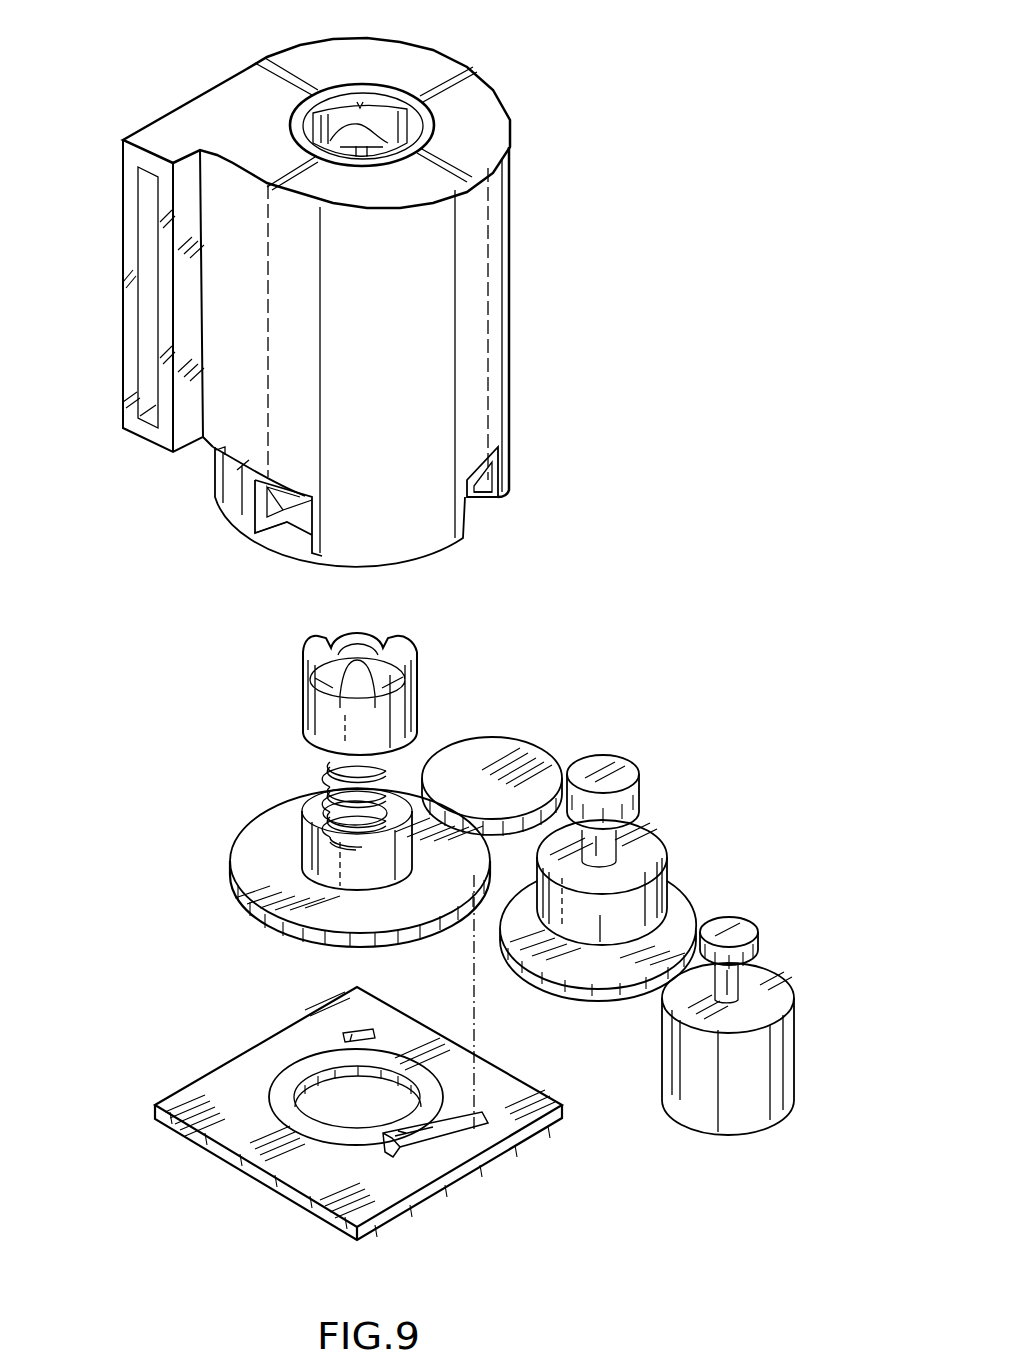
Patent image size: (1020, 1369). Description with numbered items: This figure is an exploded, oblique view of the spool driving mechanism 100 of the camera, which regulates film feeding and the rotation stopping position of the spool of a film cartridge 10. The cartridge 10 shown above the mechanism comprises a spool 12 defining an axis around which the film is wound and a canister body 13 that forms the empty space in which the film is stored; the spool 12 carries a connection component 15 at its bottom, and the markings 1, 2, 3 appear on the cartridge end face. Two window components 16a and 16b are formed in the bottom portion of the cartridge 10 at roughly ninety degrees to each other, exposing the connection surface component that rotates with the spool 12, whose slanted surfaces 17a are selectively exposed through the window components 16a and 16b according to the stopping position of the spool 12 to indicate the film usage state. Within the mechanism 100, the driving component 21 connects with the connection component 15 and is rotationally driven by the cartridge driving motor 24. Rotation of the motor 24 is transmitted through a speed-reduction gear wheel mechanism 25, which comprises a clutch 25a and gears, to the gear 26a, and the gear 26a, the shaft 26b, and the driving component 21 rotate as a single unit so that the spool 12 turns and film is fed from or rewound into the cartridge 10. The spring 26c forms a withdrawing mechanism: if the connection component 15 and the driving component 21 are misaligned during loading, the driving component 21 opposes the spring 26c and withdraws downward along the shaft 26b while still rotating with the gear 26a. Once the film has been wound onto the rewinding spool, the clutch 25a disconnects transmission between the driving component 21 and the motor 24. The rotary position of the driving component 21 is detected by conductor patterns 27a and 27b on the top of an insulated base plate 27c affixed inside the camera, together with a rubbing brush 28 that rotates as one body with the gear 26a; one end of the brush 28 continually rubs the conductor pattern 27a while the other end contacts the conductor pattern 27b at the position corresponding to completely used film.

The film cartridge 10 is at (373, 302).
The spool 12 is at (300, 118).
The canister body 13 is at (167, 132).
The connection component 15 is at (383, 108).
The position marking 1 is at (347, 65).
The position marking 2 is at (459, 130).
The position marking 3 is at (366, 184).
The window component 16a is at (300, 493).
The window component 16b is at (483, 455).
The slanted surfaces 17a is at (292, 508).
The spool driving mechanism 100 is at (447, 911).
The driving component 21 is at (413, 637).
The cartridge driving motor 24 is at (760, 1113).
The speed-reduction gear wheel mechanism 25 is at (643, 864).
The clutch 25a is at (665, 818).
The gear 26a is at (250, 860).
The shaft 26b is at (340, 830).
The spring 26c is at (332, 764).
The conductor pattern 27a is at (292, 1085).
The conductor pattern 27b is at (340, 1033).
The insulated base plate 27c is at (213, 1127).
The rubbing brush 28 is at (460, 1127).